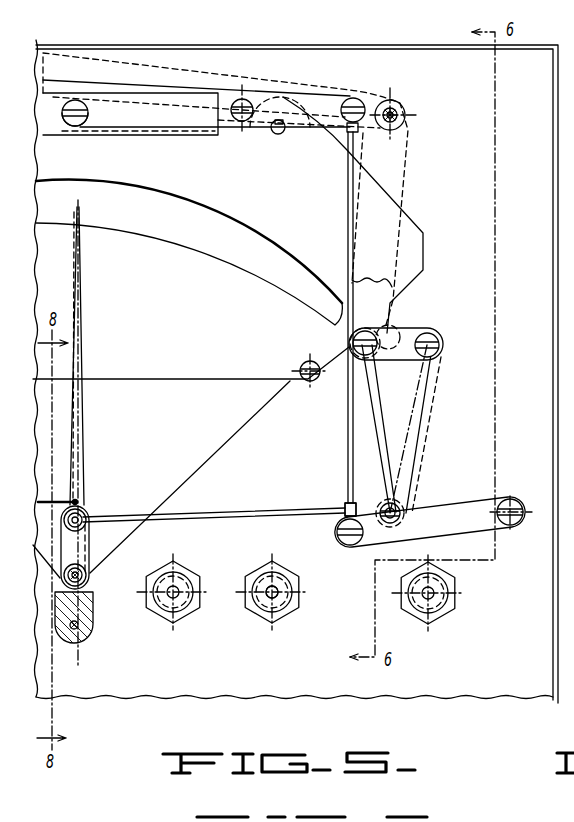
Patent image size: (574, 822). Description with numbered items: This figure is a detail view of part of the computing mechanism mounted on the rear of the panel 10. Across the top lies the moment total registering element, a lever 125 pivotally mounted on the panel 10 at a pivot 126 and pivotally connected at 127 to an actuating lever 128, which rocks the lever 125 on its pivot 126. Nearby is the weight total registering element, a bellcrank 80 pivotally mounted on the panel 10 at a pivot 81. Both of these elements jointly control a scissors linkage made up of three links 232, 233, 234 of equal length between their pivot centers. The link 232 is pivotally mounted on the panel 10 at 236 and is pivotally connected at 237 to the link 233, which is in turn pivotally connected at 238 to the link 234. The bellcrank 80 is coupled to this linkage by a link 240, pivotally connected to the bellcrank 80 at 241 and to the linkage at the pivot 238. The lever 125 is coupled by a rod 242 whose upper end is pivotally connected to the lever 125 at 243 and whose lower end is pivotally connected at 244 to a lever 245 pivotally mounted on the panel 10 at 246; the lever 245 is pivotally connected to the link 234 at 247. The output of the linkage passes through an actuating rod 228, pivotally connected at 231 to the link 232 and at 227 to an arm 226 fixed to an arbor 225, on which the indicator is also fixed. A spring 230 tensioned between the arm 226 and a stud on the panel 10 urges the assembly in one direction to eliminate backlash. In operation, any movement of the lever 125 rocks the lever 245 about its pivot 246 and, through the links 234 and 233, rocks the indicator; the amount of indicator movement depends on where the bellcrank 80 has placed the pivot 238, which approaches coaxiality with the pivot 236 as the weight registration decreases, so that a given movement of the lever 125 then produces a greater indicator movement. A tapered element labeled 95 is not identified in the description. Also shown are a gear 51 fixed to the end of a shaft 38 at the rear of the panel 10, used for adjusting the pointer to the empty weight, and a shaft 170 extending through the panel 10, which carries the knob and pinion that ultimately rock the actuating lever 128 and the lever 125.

The panel 10 is at (247, 44).
The bellcrank 80 is at (125, 62).
The actuating lever 128 is at (165, 134).
The pivotal connection 127 is at (78, 124).
The pivot 126 is at (247, 97).
The lever 125 is at (233, 128).
The pivotal connection 243 is at (358, 98).
The pivot 81 is at (395, 112).
The rod 242 is at (348, 217).
The link 240 is at (412, 332).
The pivotal connection 241 is at (352, 349).
The pivot 236 is at (386, 330).
The pivot 238 is at (440, 344).
The link 232 is at (365, 410).
The link 233 is at (377, 453).
The link 234 is at (413, 447).
The pivotal connection 231 is at (403, 502).
The pivotal connection 247 is at (398, 525).
The pivotal connection 237 is at (375, 505).
The pivotal connection 244 is at (337, 534).
The lever 245 is at (468, 526).
The pivot 246 is at (519, 525).
The actuating rod 228 is at (227, 522).
The arm 95 is at (83, 413).
The spring 230 is at (50, 499).
The arm 226 is at (92, 537).
The pivotal connection 227 is at (85, 513).
The arbor 225 is at (92, 575).
The gear 51 is at (283, 577).
The shaft 38 is at (286, 596).
The shaft 170 is at (427, 597).